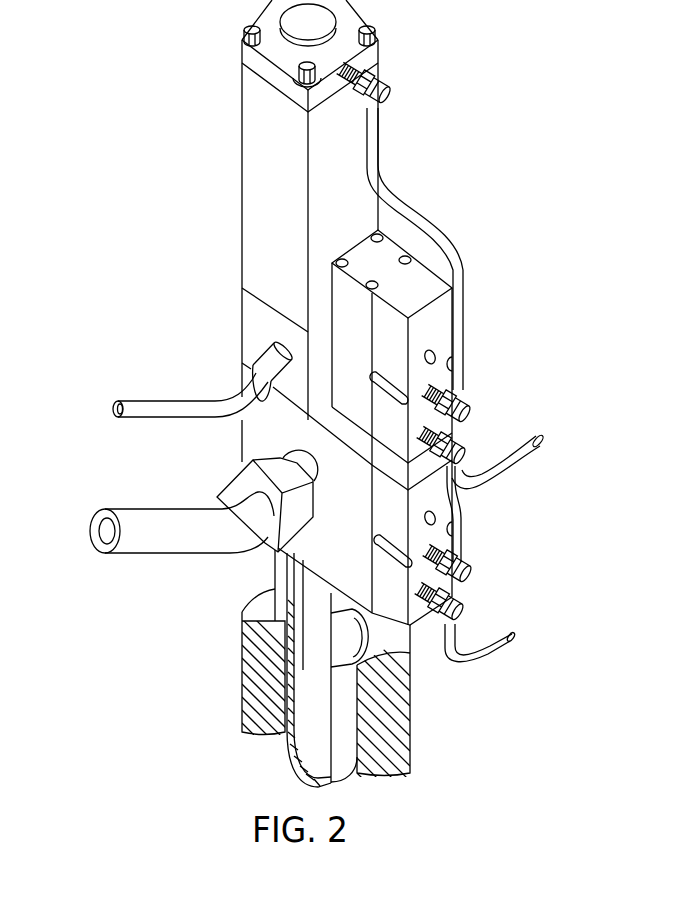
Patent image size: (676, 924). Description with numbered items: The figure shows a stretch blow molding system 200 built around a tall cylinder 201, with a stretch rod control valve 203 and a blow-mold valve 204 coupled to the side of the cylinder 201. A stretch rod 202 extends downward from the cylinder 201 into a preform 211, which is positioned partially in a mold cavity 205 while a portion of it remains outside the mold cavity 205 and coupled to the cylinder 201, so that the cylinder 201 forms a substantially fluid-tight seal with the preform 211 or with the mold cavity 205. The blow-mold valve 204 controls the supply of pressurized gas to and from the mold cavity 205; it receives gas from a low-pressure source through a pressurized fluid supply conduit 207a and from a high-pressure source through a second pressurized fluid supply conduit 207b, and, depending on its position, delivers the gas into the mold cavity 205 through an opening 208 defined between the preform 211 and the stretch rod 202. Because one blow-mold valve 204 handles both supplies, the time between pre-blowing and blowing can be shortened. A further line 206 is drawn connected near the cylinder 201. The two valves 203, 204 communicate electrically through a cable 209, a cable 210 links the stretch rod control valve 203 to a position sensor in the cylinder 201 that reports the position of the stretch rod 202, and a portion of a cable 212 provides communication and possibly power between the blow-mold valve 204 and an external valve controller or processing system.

The stretch blow molding system 200 is at (133, 64).
The cylinder 201 is at (246, 140).
The stretch rod 202 is at (312, 618).
The stretch rod control valve 203 is at (427, 292).
The blow-mold valve 204 is at (373, 537).
The mold cavity 205 is at (287, 721).
The fluid line 206 is at (138, 418).
The pressurized fluid supply conduit 207a is at (529, 452).
The pressurized fluid supply conduit 207b is at (102, 548).
The opening 208 is at (300, 585).
The cable 209 is at (459, 503).
The cable 210 is at (377, 128).
The preform 211 is at (290, 687).
The cable 212 is at (512, 638).